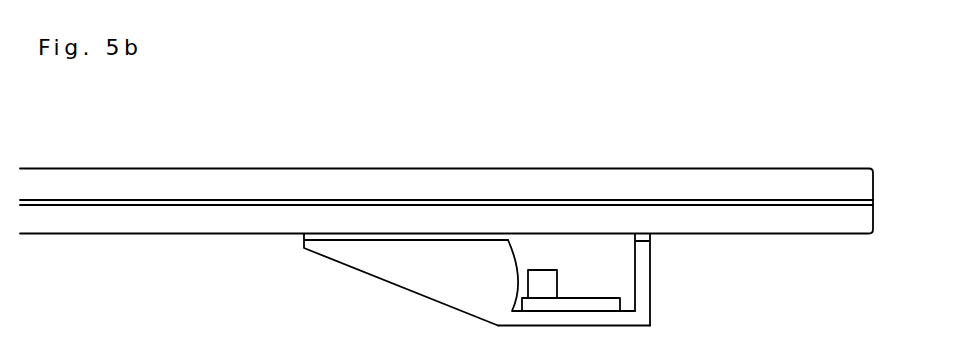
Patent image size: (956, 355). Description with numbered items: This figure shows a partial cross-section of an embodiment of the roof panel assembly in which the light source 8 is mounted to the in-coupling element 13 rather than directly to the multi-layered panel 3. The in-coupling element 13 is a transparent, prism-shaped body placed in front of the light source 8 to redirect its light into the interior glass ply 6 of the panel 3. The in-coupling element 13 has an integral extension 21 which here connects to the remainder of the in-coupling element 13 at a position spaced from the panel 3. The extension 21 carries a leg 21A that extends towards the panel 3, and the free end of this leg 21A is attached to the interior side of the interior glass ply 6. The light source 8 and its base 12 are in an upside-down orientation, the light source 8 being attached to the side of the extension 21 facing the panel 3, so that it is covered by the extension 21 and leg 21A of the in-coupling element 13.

The multi-layered panel 3 is at (446, 145).
The interior glass ply 6 is at (229, 218).
The in-coupling element 13 is at (425, 265).
The light source 8 is at (545, 282).
The base 12 is at (578, 305).
The extension 21 is at (608, 325).
The leg 21A is at (645, 266).